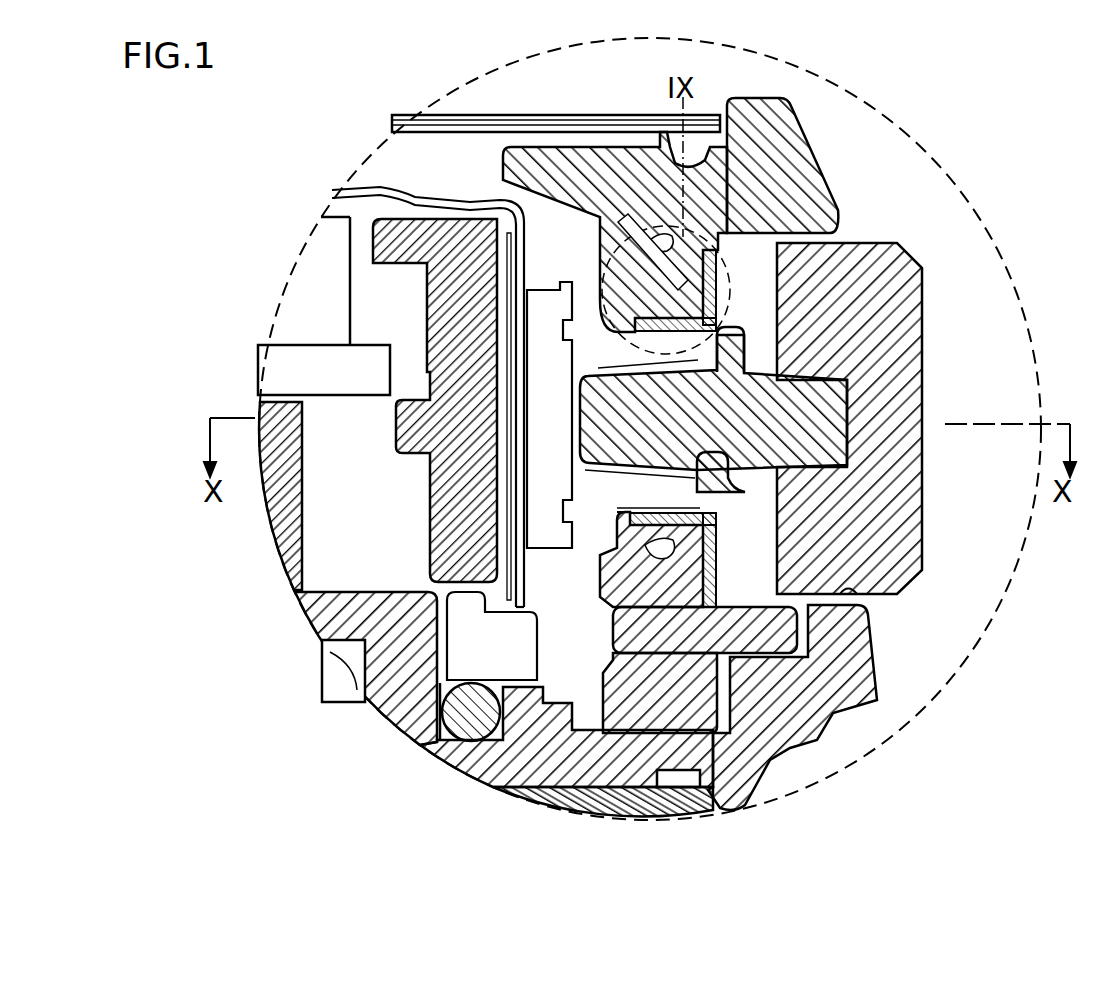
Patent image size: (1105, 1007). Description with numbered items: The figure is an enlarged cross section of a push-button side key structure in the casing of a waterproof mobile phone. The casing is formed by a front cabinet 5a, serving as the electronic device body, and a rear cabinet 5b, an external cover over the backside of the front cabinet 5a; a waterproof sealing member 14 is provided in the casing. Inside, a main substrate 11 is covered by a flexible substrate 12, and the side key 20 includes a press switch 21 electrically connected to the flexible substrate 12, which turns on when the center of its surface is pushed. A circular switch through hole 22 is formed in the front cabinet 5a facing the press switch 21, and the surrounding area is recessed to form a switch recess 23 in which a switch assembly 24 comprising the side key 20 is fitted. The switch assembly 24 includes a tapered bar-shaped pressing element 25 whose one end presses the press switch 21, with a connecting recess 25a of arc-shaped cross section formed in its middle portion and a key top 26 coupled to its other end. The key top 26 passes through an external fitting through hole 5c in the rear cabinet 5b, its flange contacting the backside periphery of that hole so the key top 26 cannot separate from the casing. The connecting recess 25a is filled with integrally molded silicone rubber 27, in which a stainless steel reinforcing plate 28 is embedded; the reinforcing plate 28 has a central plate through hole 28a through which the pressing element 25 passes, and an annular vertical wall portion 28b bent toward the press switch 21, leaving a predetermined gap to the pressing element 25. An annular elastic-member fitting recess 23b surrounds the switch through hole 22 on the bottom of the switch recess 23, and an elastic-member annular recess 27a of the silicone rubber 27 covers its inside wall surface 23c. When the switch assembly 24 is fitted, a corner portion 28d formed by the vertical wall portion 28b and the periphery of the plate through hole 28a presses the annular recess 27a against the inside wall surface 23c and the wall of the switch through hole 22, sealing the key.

The front cabinet 5a is at (826, 151).
The rear cabinet 5b is at (878, 697).
The external fitting through hole 5c is at (852, 592).
The main substrate 11 is at (310, 360).
The flexible substrate 12 is at (466, 196).
The waterproof sealing member 14 is at (447, 722).
The side key 20 is at (944, 356).
The press switch 21 is at (550, 290).
The switch through hole 22 is at (609, 503).
The switch recess 23 is at (760, 603).
The elastic-member fitting recess 23b is at (660, 236).
The inside wall surface 23c is at (700, 225).
The switch assembly 24 is at (879, 238).
The pressing element 25 is at (598, 388).
The connecting recess 25a is at (740, 366).
The key top 26 is at (905, 292).
The silicone rubber 27 is at (720, 490).
The elastic-member annular recess 27a is at (640, 230).
The reinforcing plate 28 is at (720, 258).
The plate through hole 28a is at (667, 520).
The vertical wall portion 28b is at (618, 512).
The corner portion 28d is at (712, 545).